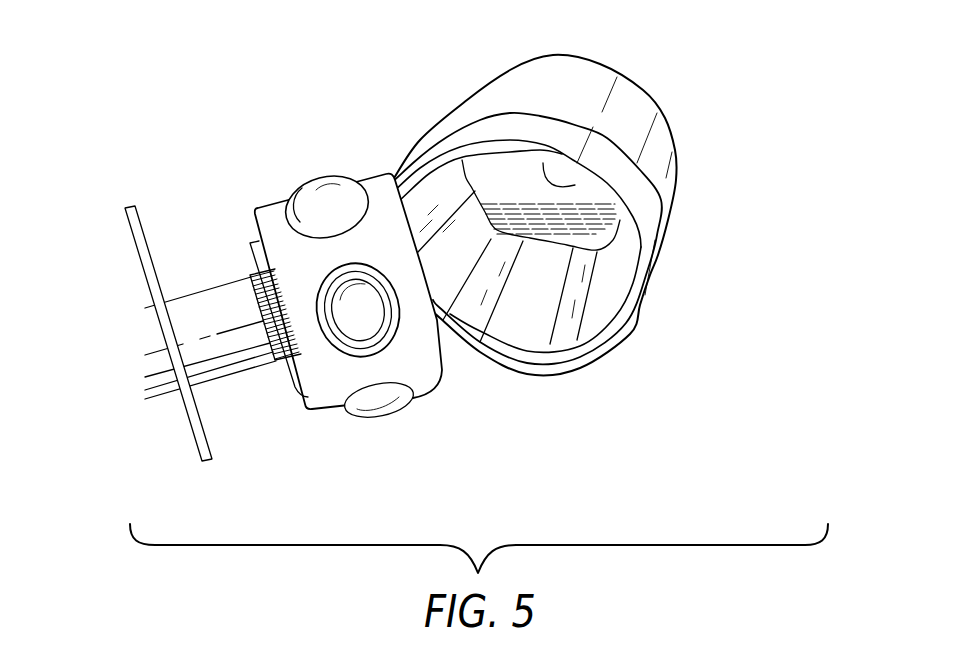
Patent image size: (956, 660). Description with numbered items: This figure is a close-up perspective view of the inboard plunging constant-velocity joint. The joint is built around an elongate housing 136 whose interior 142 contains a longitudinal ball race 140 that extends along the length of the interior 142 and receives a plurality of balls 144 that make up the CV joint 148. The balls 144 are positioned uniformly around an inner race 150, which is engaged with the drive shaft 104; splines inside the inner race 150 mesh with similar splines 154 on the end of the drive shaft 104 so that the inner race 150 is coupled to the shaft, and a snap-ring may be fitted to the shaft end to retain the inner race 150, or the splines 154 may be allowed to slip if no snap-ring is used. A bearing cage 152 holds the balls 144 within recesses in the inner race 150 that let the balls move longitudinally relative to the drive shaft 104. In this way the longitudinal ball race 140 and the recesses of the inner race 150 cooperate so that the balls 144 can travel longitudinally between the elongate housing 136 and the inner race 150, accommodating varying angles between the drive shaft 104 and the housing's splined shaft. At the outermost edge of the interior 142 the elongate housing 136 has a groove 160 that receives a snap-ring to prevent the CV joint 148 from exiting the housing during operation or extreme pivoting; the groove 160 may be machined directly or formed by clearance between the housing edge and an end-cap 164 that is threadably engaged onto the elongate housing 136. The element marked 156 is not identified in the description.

The drive shaft 104 is at (247, 358).
The elongate housing 136 is at (657, 105).
The longitudinal ball race 140 is at (483, 292).
The interior 142 is at (574, 202).
The balls 144 is at (345, 203).
The CV joint 148 is at (429, 416).
The inner race 150 is at (292, 388).
The bearing cage 152 is at (274, 218).
The splines 154 is at (251, 277).
The plate 156 is at (128, 222).
The groove 160 is at (484, 343).
The end-cap 164 is at (502, 127).